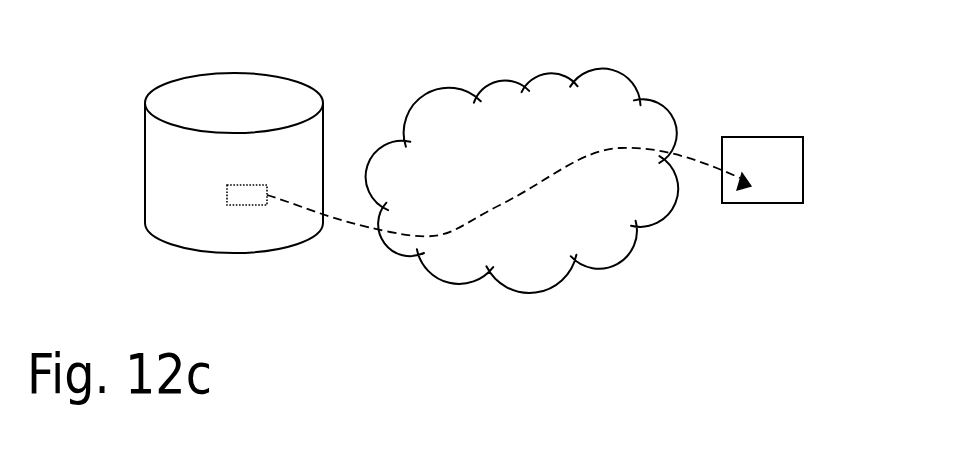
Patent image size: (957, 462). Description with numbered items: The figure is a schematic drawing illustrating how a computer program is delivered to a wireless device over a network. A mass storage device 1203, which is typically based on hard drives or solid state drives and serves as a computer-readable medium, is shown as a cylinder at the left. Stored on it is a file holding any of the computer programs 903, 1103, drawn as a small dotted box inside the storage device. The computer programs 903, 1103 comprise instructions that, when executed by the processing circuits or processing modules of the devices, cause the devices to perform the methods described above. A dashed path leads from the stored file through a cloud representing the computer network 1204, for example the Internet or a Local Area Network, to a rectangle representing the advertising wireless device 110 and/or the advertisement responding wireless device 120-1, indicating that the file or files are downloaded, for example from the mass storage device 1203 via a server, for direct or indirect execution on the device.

The mass storage device 1203 is at (145, 153).
The computer program 903 is at (241, 245).
The computer program 1103 is at (237, 206).
The computer network 1204 is at (455, 278).
The advertising wireless device 110 is at (770, 202).
The advertisement responding wireless device 120-1 is at (742, 203).